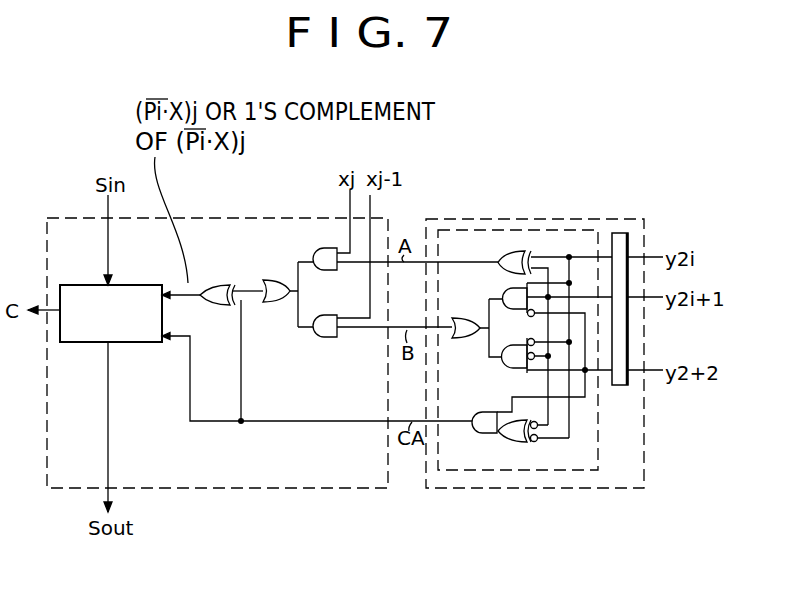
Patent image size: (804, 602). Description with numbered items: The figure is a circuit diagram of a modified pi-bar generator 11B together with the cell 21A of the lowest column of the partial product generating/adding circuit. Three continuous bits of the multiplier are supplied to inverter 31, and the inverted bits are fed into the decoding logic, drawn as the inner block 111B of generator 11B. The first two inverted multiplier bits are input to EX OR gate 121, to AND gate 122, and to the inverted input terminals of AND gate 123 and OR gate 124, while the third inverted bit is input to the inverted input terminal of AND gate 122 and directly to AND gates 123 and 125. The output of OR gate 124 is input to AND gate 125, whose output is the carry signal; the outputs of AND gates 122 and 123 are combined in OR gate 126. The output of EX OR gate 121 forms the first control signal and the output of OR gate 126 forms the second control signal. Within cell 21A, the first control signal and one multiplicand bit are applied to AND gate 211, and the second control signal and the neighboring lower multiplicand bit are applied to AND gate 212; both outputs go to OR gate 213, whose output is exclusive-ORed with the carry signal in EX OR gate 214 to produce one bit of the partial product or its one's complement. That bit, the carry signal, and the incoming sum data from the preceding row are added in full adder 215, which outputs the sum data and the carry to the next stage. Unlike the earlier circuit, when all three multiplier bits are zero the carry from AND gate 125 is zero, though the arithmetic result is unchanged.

The partial product generating/adding circuit 21A is at (208, 218).
The full adder 215 is at (90, 285).
The EX OR gate 214 is at (213, 305).
The OR gate 213 is at (263, 303).
The AND gate 211 is at (323, 248).
The AND gate 212 is at (325, 338).
The pi-bar generator 11B is at (438, 218).
The decoder logic block 111B is at (516, 230).
The EX OR gate 121 is at (500, 256).
The AND gate 122 is at (503, 292).
The OR gate 126 is at (465, 338).
The AND gate 123 is at (513, 368).
The AND gate 125 is at (486, 433).
The OR gate 124 is at (513, 442).
The inverter 31 is at (621, 233).